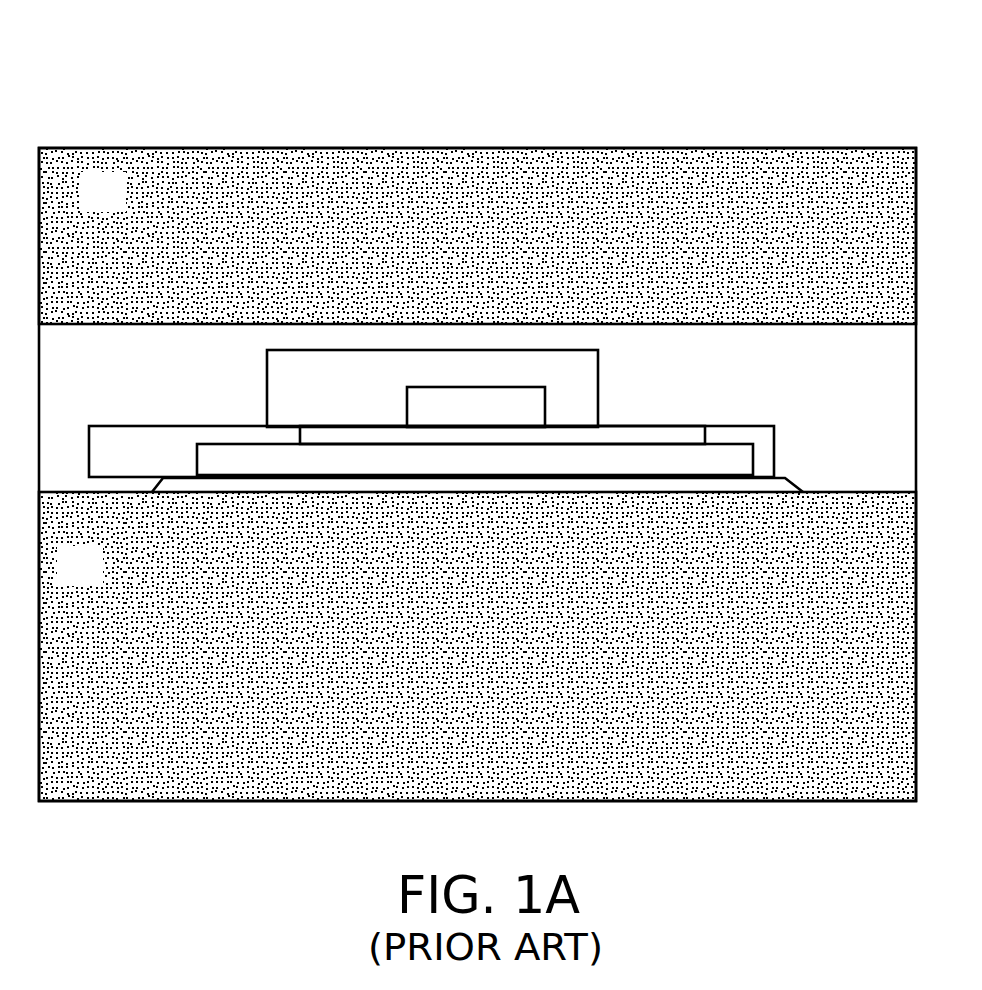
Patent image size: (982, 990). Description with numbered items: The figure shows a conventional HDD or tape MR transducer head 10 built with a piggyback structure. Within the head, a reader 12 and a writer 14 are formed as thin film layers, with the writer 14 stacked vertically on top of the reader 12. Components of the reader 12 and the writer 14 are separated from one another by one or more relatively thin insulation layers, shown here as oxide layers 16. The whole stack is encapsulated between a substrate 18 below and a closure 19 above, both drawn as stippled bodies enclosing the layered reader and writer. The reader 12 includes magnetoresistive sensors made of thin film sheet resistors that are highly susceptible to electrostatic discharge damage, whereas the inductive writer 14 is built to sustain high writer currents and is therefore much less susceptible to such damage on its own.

The MR transducer head 10 is at (132, 58).
The reader 12 is at (546, 488).
The writer 14 is at (538, 340).
The oxide layers 16 is at (604, 418).
The substrate 18 is at (477, 646).
The closure 19 is at (477, 236).